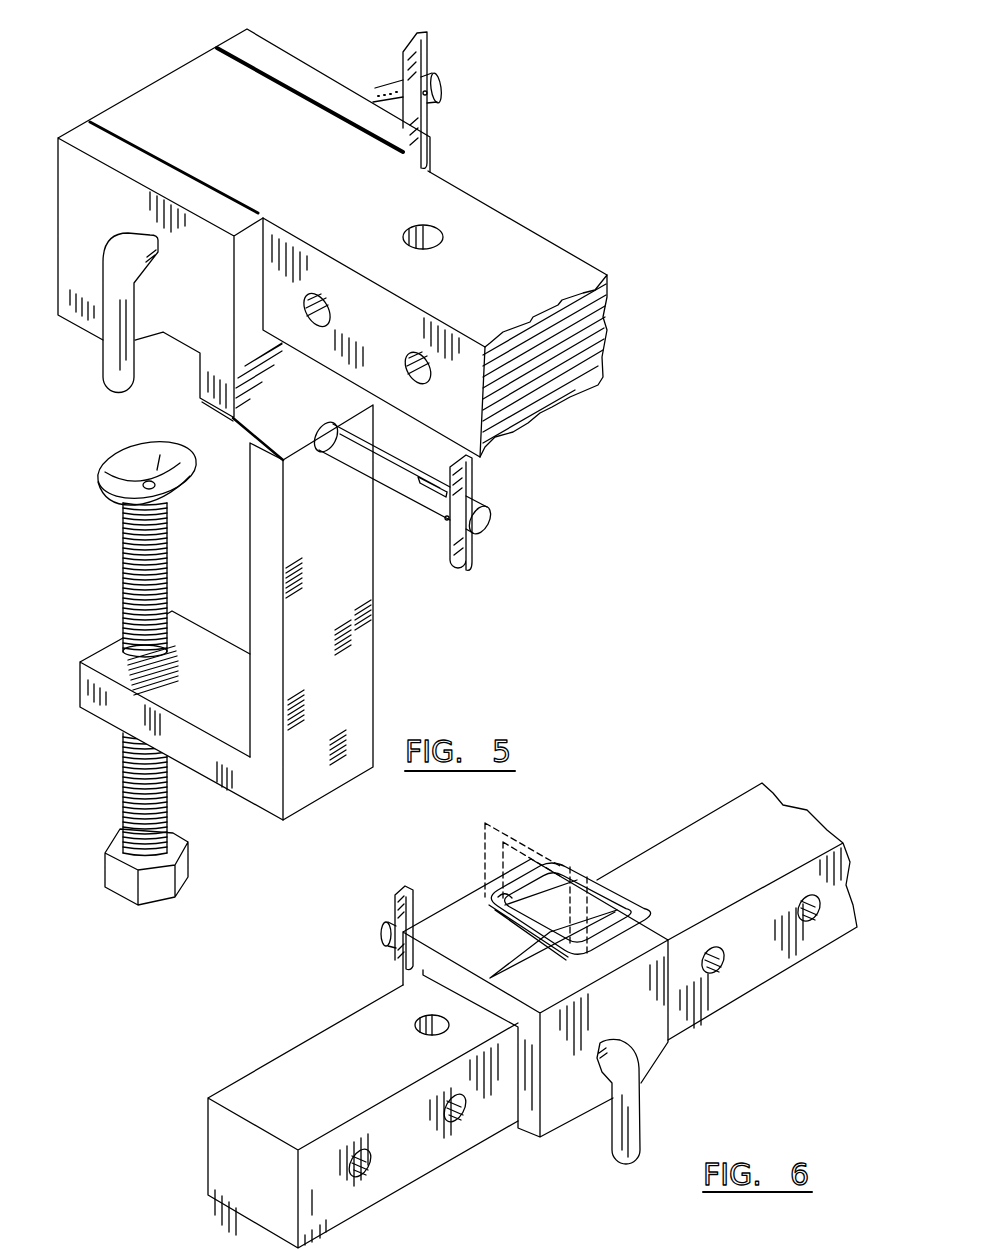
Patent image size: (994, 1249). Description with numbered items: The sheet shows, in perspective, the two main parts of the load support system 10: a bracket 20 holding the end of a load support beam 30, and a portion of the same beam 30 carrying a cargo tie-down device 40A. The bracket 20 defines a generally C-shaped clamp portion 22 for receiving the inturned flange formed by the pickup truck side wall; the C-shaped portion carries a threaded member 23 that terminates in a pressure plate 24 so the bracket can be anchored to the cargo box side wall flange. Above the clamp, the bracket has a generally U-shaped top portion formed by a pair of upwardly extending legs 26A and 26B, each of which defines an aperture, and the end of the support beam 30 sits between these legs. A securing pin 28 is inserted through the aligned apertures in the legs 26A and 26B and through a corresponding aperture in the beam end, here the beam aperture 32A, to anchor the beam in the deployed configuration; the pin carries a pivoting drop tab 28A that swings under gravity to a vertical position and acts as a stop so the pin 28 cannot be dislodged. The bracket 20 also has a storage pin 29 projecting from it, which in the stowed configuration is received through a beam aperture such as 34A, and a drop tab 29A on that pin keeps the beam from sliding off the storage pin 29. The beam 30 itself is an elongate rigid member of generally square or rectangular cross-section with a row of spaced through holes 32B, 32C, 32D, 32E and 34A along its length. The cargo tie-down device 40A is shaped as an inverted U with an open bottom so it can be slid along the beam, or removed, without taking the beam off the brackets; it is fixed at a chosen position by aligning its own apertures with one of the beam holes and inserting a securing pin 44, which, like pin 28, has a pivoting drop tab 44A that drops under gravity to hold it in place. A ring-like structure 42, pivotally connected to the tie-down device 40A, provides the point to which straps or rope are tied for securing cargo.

In FIG. 5, the clamp assembly 10 is at (578, 125).
In FIG. 5, the bracket 20 is at (433, 637).
In FIG. 5, the C-shaped clamp portion 22 is at (258, 623).
In FIG. 5, the threaded member 23 is at (137, 580).
In FIG. 5, the pressure plate 24 is at (128, 470).
In FIG. 5, the upwardly extending leg 26A is at (285, 63).
In FIG. 5, the upwardly extending leg 26B is at (77, 137).
In FIG. 5, the securing pin 28 is at (115, 348).
In FIG. 5, the pivoting drop tab 28A is at (427, 53).
In FIG. 5, the storage pin 29 is at (390, 472).
In FIG. 5, the drop tab 29A is at (472, 558).
In FIG. 5, the load support beam 30 is at (560, 245).
In FIG. 6, the load support beam 30 is at (733, 875).
In FIG. 6, the through hole 32A is at (363, 1162).
In FIG. 5, the through hole 32B is at (326, 332).
In FIG. 6, the through hole 32B is at (462, 1118).
In FIG. 5, the through hole 32C is at (495, 437).
In FIG. 6, the through hole 32D is at (723, 958).
In FIG. 6, the hole 32E is at (817, 915).
In FIG. 5, the beam aperture 34A is at (435, 228).
In FIG. 6, the beam aperture 34A is at (422, 1015).
In FIG. 6, the cargo tie-down device 40A is at (665, 1040).
In FIG. 6, the ring-like structure 42 is at (598, 883).
In FIG. 6, the securing pin 44 is at (618, 1162).
In FIG. 6, the pivoting drop tab 44A is at (393, 900).